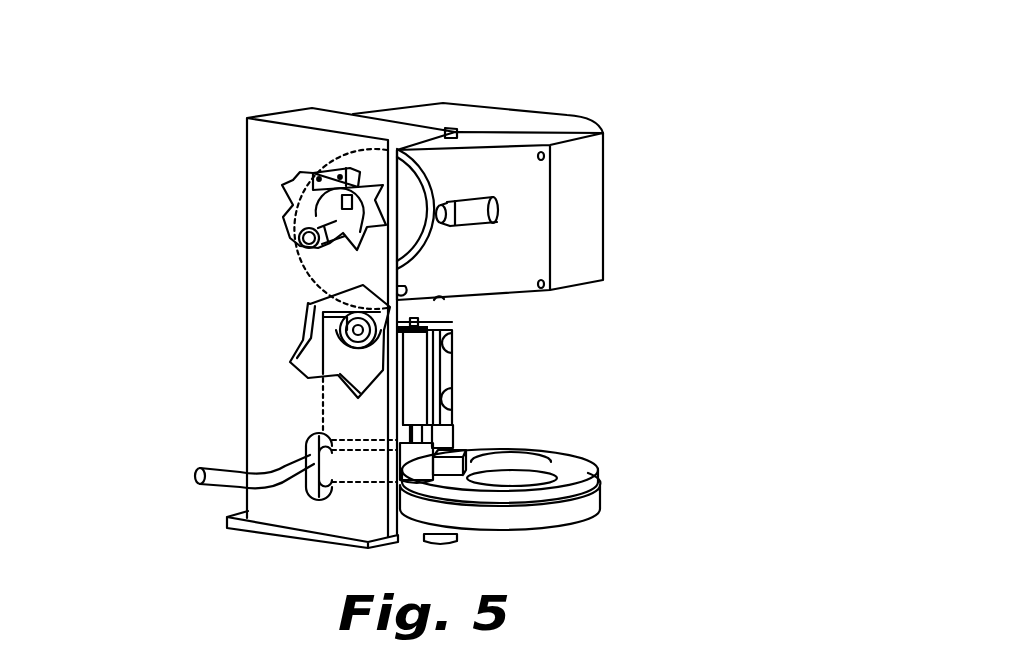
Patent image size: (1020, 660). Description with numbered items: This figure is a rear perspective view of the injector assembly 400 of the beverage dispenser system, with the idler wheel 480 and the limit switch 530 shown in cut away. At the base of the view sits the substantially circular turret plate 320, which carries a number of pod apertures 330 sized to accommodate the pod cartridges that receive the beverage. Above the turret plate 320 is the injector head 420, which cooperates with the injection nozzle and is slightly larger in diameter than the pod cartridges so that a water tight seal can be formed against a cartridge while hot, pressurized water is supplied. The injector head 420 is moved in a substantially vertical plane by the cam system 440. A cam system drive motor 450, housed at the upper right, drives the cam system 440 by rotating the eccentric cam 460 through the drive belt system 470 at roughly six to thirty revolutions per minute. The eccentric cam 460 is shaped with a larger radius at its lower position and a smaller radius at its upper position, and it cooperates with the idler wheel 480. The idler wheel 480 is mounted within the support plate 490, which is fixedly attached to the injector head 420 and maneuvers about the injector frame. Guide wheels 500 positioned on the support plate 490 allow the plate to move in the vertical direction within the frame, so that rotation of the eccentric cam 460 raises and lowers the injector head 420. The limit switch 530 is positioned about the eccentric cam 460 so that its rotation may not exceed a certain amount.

The injector assembly 400 is at (333, 79).
The limit switch 530 is at (313, 170).
The eccentric cam 460 is at (417, 184).
The drive belt system 470 is at (488, 199).
The cam system drive motor 450 is at (586, 183).
The cam system 440 is at (298, 271).
The support plate 490 is at (338, 350).
The idler wheel 480 is at (450, 326).
The guide wheels 500 is at (448, 342).
The injector head 420 is at (464, 452).
The pod apertures 330 is at (597, 468).
The turret plate 320 is at (601, 512).